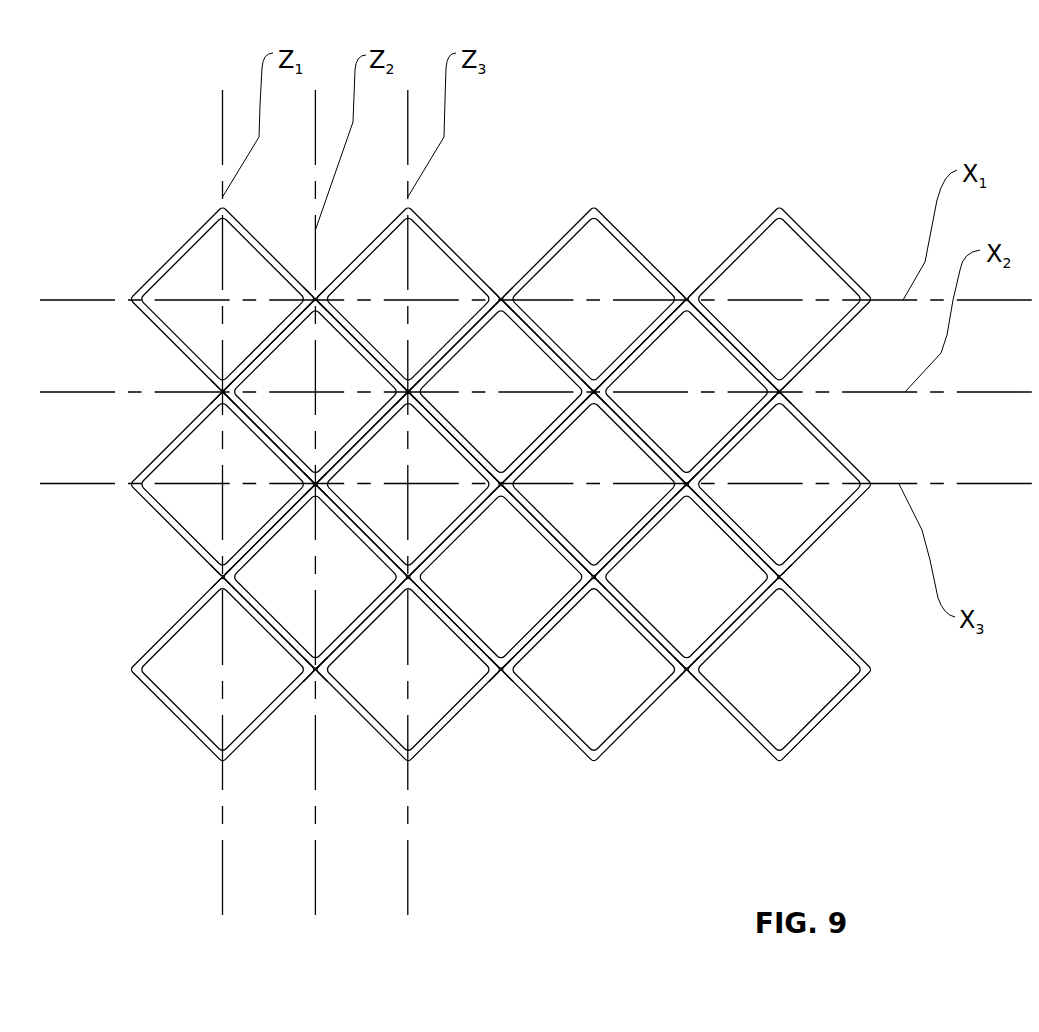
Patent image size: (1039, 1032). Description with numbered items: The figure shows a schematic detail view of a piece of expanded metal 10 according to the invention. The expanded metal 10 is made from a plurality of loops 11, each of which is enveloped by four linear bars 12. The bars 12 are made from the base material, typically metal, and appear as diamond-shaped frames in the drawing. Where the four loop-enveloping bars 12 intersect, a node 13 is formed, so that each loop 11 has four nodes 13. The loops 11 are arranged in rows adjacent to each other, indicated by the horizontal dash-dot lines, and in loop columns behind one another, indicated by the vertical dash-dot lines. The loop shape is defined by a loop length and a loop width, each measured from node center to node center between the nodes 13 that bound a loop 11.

The expanded metal 10 is at (536, 465).
The loop 11 is at (675, 598).
The linear bar 12 is at (829, 536).
The node 13 is at (501, 284).